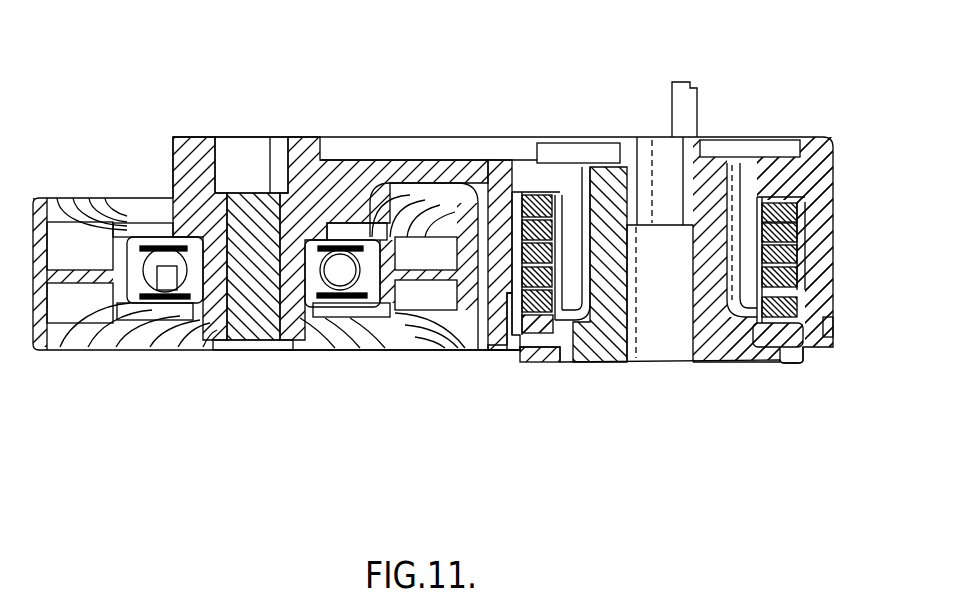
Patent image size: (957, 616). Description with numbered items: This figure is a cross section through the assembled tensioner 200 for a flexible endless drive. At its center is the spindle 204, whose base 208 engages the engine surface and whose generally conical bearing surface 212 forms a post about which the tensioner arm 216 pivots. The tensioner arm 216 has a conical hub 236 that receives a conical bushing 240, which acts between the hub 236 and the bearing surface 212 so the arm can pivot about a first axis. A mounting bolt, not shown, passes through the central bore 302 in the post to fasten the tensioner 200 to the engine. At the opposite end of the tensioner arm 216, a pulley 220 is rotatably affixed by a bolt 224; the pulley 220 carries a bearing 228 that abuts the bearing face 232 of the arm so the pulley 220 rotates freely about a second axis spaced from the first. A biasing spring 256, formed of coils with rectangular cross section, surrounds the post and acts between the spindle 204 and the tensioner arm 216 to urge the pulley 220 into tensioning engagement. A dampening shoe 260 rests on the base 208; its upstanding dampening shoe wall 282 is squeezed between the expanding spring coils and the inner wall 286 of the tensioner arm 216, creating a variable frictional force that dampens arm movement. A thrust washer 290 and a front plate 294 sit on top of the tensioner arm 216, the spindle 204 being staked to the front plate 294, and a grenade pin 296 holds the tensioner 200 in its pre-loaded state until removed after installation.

The tensioner 200 is at (70, 110).
The spindle 204 is at (750, 383).
The base 208 is at (532, 363).
The bearing surface 212 is at (680, 352).
The tensioner arm 216 is at (458, 160).
The pulley 220 is at (42, 350).
The bolt 224 is at (257, 350).
The bearing 228 is at (125, 348).
The bearing face 232 is at (147, 222).
The conical hub 236 is at (754, 207).
The conical bushing 240 is at (514, 170).
The biasing spring 256 is at (568, 364).
The dampening shoe 260 is at (792, 365).
The dampening shoe wall 282 is at (497, 352).
The inner wall 286 is at (481, 350).
The thrust washer 290 is at (580, 168).
The front plate 294 is at (744, 157).
The grenade pin 296 is at (680, 85).
The central bore 302 is at (708, 240).